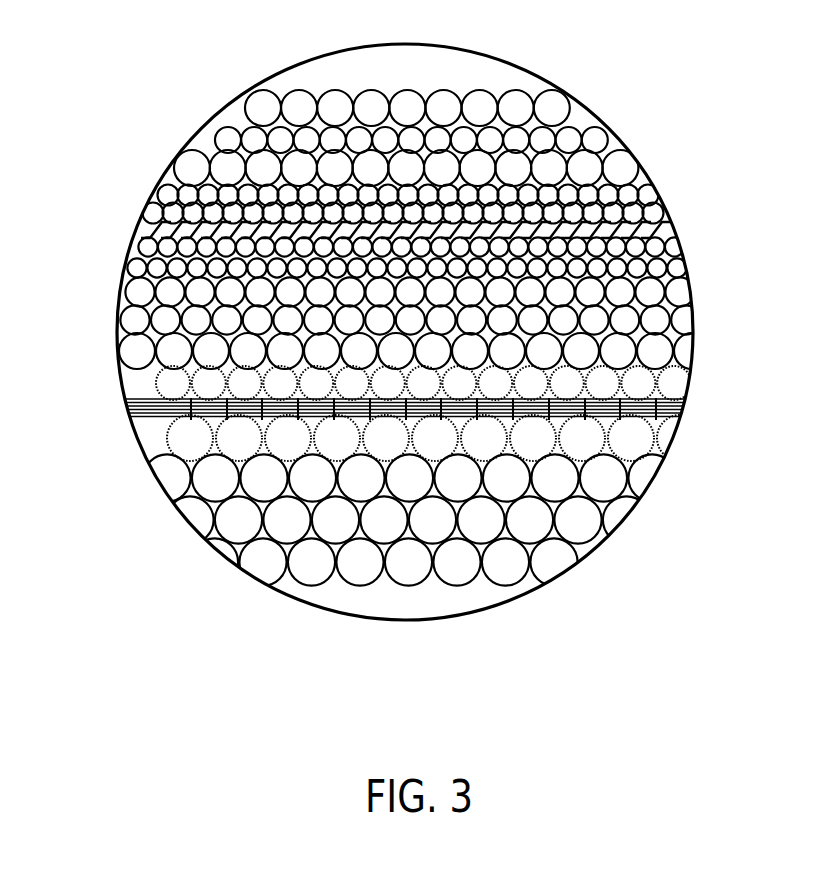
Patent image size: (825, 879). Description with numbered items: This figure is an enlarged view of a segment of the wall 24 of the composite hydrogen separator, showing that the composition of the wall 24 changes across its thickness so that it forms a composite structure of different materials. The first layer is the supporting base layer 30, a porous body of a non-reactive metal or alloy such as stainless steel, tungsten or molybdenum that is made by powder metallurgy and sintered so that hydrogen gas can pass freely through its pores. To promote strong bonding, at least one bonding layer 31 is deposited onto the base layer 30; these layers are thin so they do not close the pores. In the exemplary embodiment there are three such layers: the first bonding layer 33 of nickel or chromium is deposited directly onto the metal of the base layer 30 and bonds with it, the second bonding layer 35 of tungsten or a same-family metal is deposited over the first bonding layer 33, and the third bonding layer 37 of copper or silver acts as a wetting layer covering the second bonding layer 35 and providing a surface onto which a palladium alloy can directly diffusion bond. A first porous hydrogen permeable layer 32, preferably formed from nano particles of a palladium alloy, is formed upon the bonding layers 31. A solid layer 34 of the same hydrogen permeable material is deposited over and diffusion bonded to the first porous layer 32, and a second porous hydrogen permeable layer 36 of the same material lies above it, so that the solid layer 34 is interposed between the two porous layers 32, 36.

The wall 24 is at (512, 81).
The supporting base layer 30 is at (560, 580).
The bonding layer 31 is at (428, 424).
The first porous hydrogen permeable layer 32 is at (693, 247).
The first bonding layer 33 is at (686, 412).
The solid layer 34 is at (660, 232).
The second bonding layer 35 is at (686, 410).
The second porous hydrogen permeable layer 36 is at (580, 100).
The third bonding layer 37 is at (686, 408).